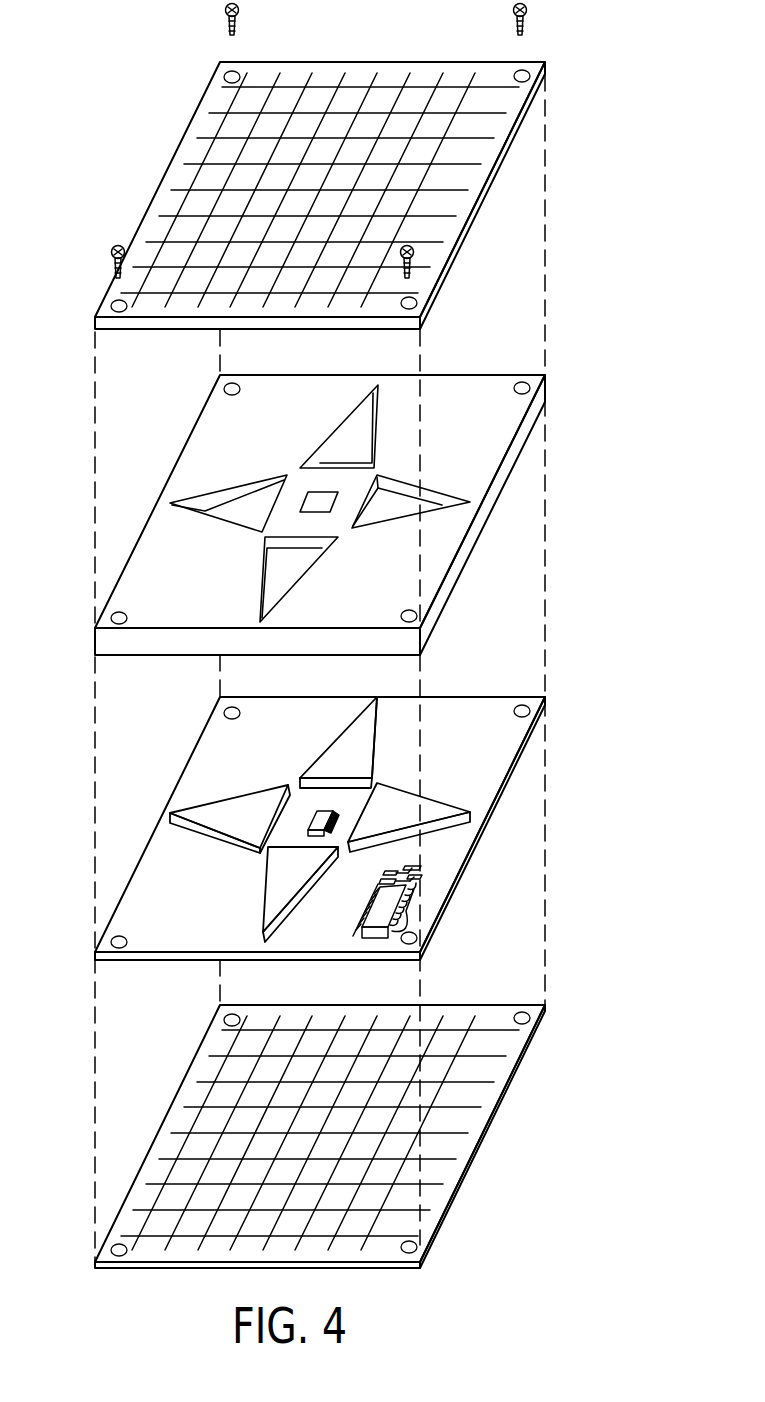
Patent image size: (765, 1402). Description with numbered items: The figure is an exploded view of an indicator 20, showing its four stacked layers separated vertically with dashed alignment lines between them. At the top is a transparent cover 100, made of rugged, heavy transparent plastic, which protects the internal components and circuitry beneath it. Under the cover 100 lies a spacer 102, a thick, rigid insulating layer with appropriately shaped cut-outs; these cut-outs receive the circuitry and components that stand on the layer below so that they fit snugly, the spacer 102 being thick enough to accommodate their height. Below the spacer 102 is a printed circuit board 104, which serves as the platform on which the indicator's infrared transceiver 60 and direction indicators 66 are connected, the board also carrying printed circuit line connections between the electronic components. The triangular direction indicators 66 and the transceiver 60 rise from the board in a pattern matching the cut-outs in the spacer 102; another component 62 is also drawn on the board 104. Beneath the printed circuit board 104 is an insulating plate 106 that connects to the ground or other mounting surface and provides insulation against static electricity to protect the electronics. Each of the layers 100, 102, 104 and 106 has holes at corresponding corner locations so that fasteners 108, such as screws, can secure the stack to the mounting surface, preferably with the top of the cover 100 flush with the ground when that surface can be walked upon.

The indicator 20 is at (152, 50).
The transparent cover 100 is at (495, 122).
The fasteners 108 is at (112, 261).
The spacer 102 is at (480, 442).
The printed circuit board 104 is at (498, 745).
The direction indicators 66 is at (222, 820).
The infrared transceiver 60 is at (313, 817).
The connector 62 is at (390, 893).
The insulating plate 106 is at (440, 1122).